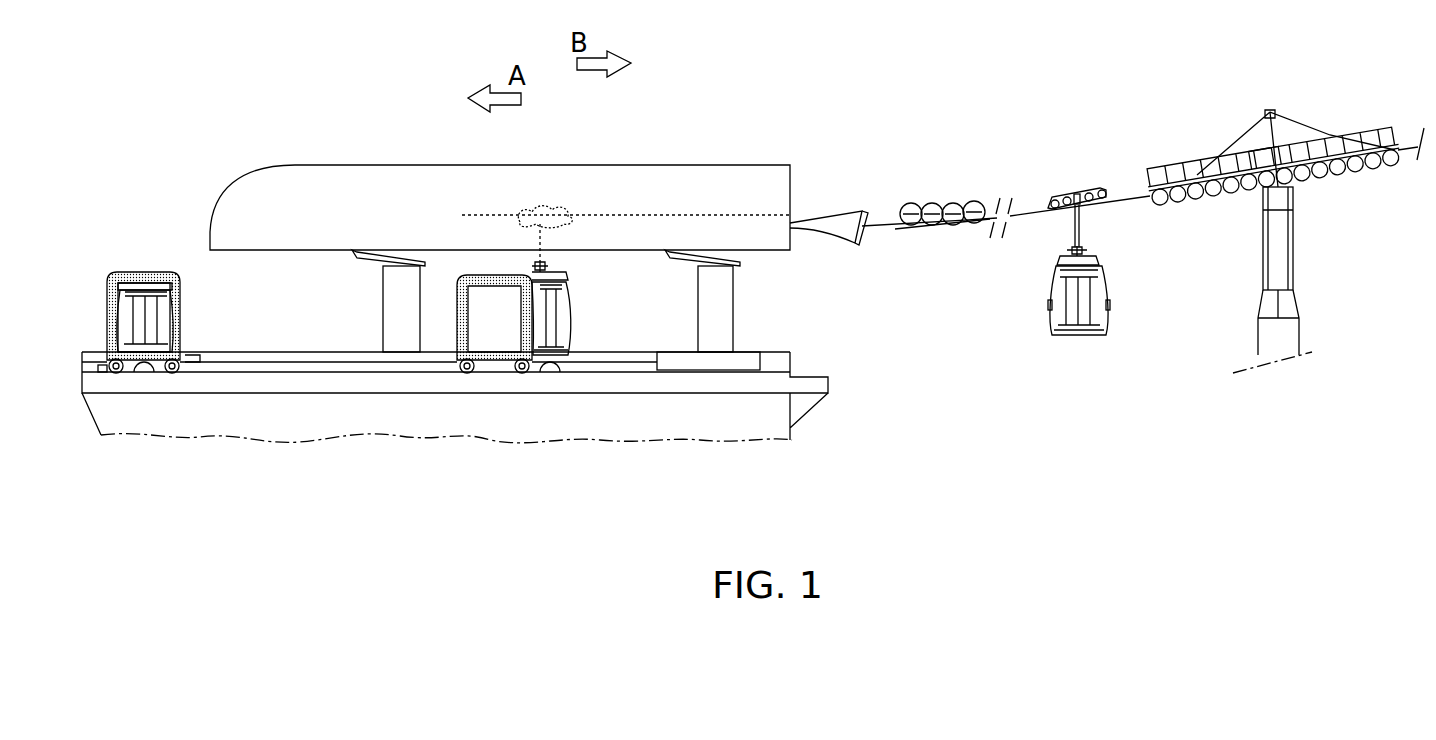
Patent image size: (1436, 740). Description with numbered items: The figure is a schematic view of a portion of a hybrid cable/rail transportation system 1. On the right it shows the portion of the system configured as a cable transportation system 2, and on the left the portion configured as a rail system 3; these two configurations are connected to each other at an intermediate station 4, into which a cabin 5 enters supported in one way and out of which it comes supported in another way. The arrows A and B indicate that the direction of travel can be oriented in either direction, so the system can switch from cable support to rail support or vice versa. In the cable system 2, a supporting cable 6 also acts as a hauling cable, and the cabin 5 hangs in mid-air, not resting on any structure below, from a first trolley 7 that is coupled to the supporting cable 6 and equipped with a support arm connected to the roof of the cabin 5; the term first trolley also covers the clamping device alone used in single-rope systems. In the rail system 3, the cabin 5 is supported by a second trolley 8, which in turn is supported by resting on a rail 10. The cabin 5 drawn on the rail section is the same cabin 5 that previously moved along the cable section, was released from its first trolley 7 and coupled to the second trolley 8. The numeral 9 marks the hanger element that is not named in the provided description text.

The hybrid cable/rail transportation system 1 is at (818, 108).
The cable transportation system portion 2 is at (1046, 170).
The rail system portion 3 is at (170, 384).
The intermediate station 4 is at (403, 180).
The cabin 5 is at (178, 302).
The supporting cable 6 is at (1033, 208).
The first trolley 7 is at (548, 210).
The second trolley 8 is at (106, 378).
The hanger 9 is at (546, 258).
The rail 10 is at (150, 370).